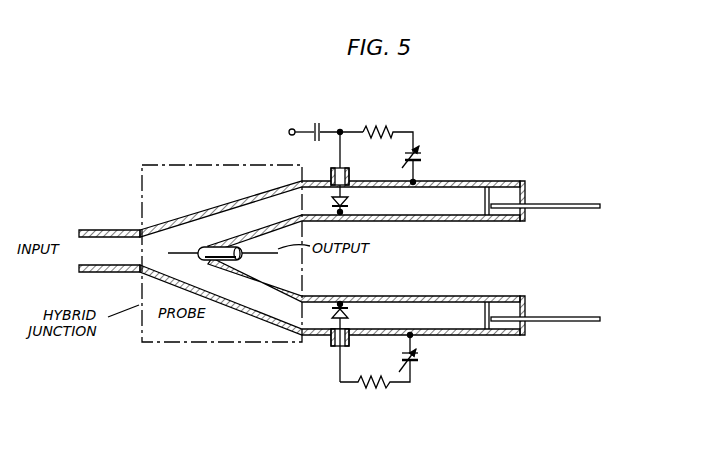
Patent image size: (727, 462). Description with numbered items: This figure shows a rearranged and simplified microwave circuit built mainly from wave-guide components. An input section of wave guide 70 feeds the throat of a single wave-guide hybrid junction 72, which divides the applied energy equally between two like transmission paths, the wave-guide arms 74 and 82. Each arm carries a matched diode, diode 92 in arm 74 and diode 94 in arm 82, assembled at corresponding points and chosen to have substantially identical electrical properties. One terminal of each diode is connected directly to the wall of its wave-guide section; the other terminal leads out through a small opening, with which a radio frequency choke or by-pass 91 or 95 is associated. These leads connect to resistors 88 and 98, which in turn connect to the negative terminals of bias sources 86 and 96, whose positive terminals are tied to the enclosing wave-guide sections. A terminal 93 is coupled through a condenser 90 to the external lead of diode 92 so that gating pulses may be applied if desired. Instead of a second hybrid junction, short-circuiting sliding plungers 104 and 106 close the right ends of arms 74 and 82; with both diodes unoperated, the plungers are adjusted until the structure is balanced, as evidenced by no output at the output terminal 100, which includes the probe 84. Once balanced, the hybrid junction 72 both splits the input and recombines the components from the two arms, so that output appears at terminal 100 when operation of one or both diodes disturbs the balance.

The input section of wave guide 70 is at (118, 222).
The hybrid junction 72 is at (190, 164).
The arm 74 is at (437, 243).
The arm 82 is at (437, 287).
The probe 84 is at (179, 302).
The bias source 86 is at (428, 158).
The resistor 88 is at (374, 128).
The condenser 90 is at (318, 122).
The radio frequency choke or by-pass 91 is at (351, 177).
The diode 92 is at (350, 203).
The terminal 93 is at (290, 128).
The diode 94 is at (350, 315).
The radio frequency choke or by-pass 95 is at (329, 336).
The bias source 96 is at (424, 359).
The resistor 98 is at (367, 386).
The output terminal 100 is at (214, 264).
The short-circuiting sliding plunger 104 is at (497, 190).
The short-circuiting sliding plunger 106 is at (590, 203).